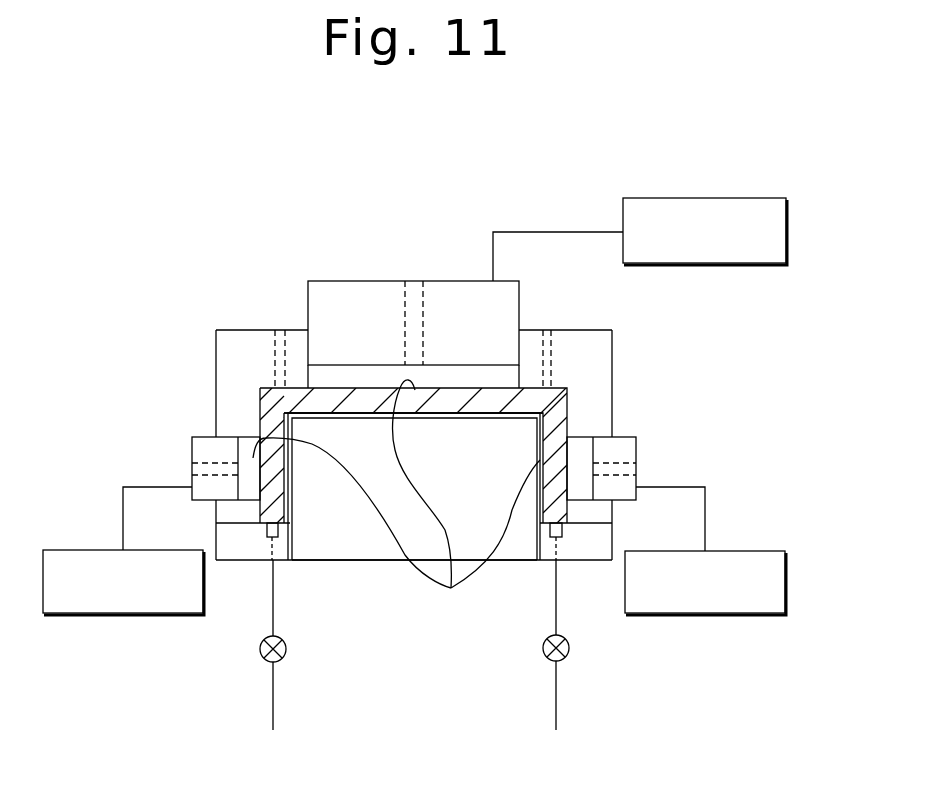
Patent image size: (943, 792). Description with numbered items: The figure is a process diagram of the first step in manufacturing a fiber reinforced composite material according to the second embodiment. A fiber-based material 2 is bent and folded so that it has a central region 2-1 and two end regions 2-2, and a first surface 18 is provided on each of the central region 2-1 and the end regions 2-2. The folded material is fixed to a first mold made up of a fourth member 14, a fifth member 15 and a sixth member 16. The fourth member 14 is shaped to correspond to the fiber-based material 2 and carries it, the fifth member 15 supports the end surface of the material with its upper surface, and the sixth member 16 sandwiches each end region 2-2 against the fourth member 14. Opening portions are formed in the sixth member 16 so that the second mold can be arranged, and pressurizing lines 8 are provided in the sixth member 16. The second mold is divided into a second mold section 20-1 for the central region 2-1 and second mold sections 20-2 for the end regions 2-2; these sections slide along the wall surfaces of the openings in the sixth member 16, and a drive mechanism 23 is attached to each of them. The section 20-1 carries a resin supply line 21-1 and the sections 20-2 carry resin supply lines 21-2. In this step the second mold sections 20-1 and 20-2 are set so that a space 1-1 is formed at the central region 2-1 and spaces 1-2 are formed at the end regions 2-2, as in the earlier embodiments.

The space 1-1 is at (467, 377).
The space 1-2 is at (247, 447).
The fiber-based material 2 is at (568, 388).
The central region 2-1 is at (426, 402).
The end regions 2-2 is at (275, 463).
The pressurizing lines 8 is at (273, 348).
The fourth member 14 is at (385, 548).
The fifth member 15 is at (247, 548).
The sixth member 16 is at (227, 420).
The first surface 18 is at (396, 497).
The second mold section 20-1 is at (440, 298).
The second mold sections 20-2 is at (192, 446).
The resin supply line 21-1 is at (403, 298).
The resin supply lines 21-2 is at (192, 470).
The drive mechanism 23 is at (700, 195).